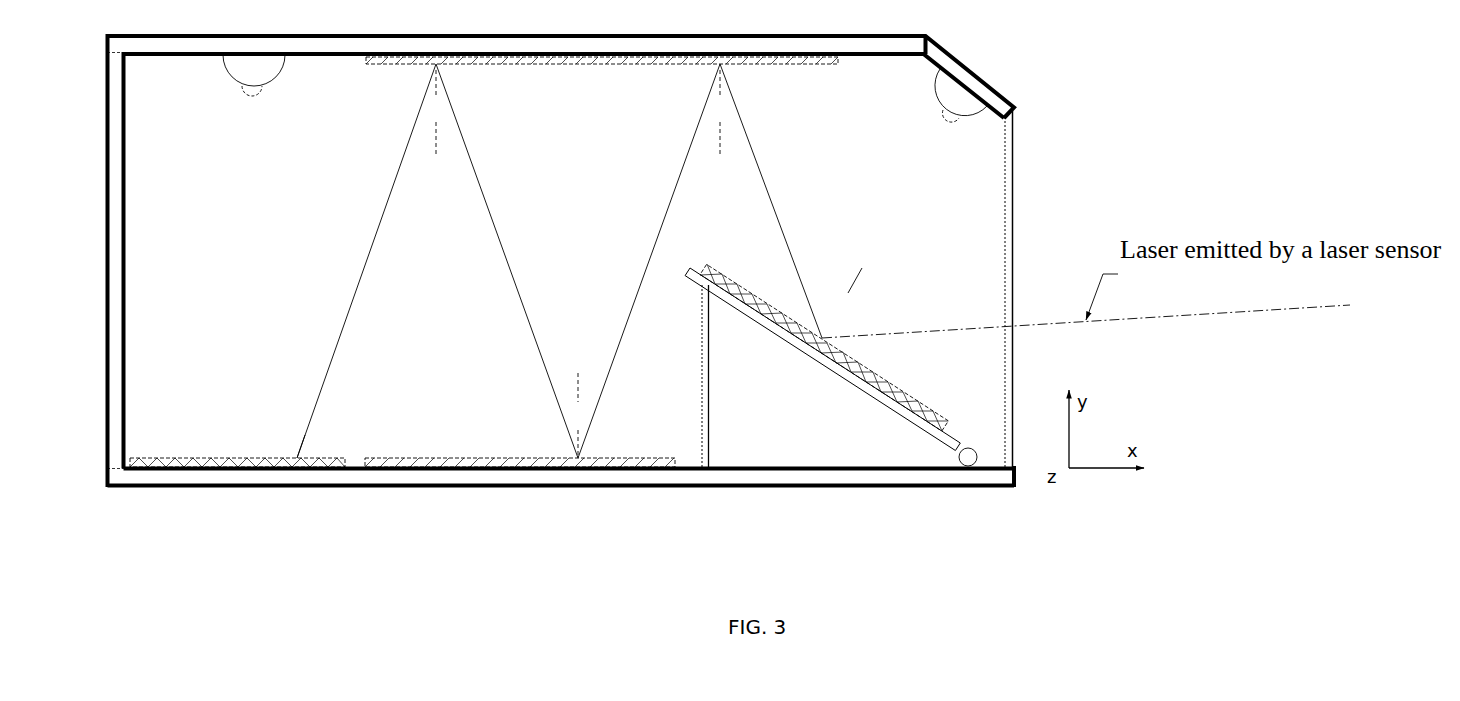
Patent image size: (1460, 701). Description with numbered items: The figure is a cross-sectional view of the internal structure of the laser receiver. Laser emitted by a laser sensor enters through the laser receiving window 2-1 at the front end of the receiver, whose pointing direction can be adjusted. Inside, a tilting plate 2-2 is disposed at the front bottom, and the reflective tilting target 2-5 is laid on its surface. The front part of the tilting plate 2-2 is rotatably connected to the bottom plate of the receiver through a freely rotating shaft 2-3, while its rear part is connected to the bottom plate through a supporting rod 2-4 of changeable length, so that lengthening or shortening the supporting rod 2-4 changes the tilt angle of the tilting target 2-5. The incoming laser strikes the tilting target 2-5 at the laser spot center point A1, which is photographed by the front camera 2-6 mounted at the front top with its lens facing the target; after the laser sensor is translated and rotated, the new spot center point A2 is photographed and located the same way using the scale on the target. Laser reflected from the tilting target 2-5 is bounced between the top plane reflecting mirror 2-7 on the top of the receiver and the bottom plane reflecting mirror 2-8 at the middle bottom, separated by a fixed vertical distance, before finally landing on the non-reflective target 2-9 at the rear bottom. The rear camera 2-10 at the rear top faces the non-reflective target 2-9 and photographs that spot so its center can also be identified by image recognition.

The laser receiving window 2-1 is at (1013, 254).
The inclined reflecting plate 2-2 is at (818, 369).
The rotating shaft 2-3 is at (956, 455).
The support post 2-4 is at (705, 368).
The tilting target 2-5 is at (856, 359).
The front camera 2-6 is at (948, 104).
The plane reflecting mirror 2-7 is at (498, 62).
The plane reflecting mirror 2-8 is at (458, 457).
The non-reflective target 2-9 is at (218, 456).
The rear camera 2-10 is at (260, 80).
The laser spot center point A1 is at (824, 337).
The laser spot center point A2 is at (298, 456).